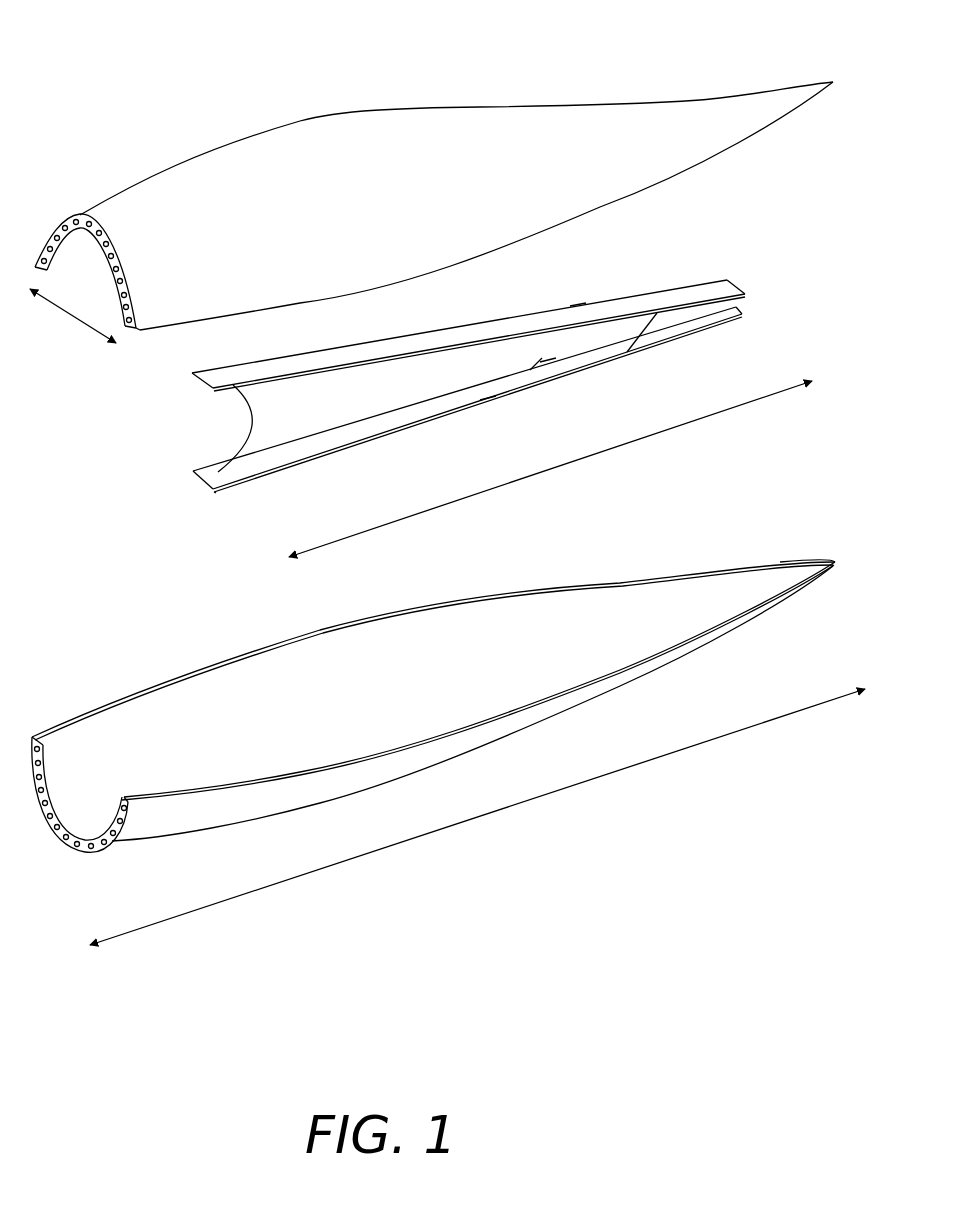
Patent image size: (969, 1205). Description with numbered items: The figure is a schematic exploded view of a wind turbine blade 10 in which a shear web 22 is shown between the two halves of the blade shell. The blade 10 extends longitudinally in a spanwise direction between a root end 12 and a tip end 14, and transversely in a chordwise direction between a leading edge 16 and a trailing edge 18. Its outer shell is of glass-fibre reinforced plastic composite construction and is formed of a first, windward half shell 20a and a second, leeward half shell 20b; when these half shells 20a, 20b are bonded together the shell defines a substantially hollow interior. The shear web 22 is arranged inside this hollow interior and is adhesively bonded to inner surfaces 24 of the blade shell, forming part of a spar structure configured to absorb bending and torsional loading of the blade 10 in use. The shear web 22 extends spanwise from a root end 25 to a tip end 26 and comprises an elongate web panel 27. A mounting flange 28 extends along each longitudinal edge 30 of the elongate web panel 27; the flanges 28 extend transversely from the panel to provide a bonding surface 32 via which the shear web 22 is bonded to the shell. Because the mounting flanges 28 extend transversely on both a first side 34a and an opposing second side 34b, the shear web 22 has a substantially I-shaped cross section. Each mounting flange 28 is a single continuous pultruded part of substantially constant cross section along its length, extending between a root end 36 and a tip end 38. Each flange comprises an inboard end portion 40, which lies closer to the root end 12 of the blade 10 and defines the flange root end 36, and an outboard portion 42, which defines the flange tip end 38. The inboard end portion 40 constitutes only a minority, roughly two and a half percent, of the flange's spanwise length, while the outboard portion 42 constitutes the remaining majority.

The wind turbine blade 10 is at (154, 62).
The root end 12 is at (144, 341).
The tip end 14 is at (827, 545).
The leading edge 16 is at (501, 243).
The trailing edge 18 is at (345, 626).
The first half shell 20a is at (566, 86).
The second half shell 20b is at (651, 694).
The shear web 22 is at (488, 413).
The inner surfaces 24 is at (68, 241).
The root end 25 is at (219, 357).
The tip end 26 is at (729, 265).
The elongate web panel 27 is at (380, 416).
The mounting flange 28 is at (650, 313).
The longitudinal edge 30 is at (284, 463).
The bonding surface 32 is at (421, 340).
The first side 34a is at (548, 358).
The second side 34b is at (581, 288).
The root end 36 is at (205, 489).
The tip end 38 is at (745, 296).
The inboard end portion 40 is at (239, 487).
The outboard portion 42 is at (582, 373).